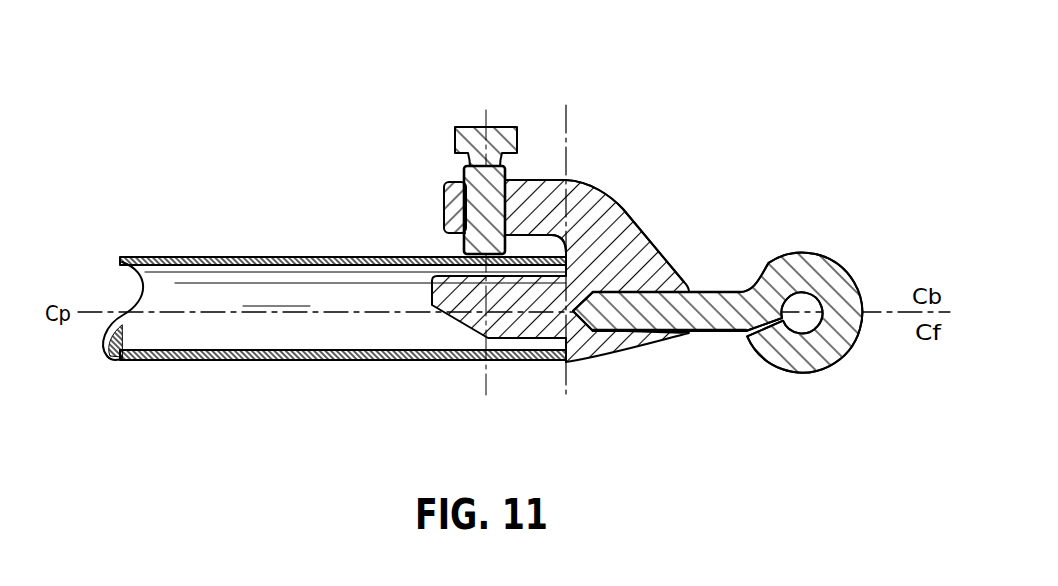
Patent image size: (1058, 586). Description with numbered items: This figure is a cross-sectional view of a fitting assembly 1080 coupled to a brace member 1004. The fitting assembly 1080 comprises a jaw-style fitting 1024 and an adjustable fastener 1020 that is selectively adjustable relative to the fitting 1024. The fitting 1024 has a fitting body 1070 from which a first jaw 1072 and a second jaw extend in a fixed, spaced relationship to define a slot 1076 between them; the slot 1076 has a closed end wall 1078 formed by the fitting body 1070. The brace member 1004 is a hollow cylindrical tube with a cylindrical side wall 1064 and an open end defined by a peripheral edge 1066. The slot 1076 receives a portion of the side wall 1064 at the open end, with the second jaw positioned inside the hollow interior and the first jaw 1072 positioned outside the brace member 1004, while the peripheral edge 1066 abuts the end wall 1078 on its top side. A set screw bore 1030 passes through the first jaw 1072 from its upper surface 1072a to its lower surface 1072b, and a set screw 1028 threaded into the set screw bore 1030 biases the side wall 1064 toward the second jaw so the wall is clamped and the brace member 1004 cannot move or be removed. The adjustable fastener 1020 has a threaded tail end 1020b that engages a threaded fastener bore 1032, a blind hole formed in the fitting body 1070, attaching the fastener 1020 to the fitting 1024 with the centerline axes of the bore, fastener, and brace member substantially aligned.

The brace member 1004 is at (236, 364).
The cylindrical side wall 1064 is at (196, 255).
The peripheral edge 1066 is at (562, 365).
The fitting 1024 is at (673, 229).
The fitting body 1070 is at (655, 268).
The slot 1076 is at (573, 245).
The end wall 1078 is at (520, 246).
The fitting assembly 1080 is at (611, 238).
The adjustable fastener 1020 is at (867, 242).
The threaded tail end 1020b is at (685, 320).
The fastener bore 1032 is at (644, 332).
The set screw 1028 is at (425, 133).
The set screw bore 1030 is at (447, 197).
The first jaw 1072 is at (447, 217).
The upper surface 1072a is at (541, 176).
The lower surface 1072b is at (456, 234).